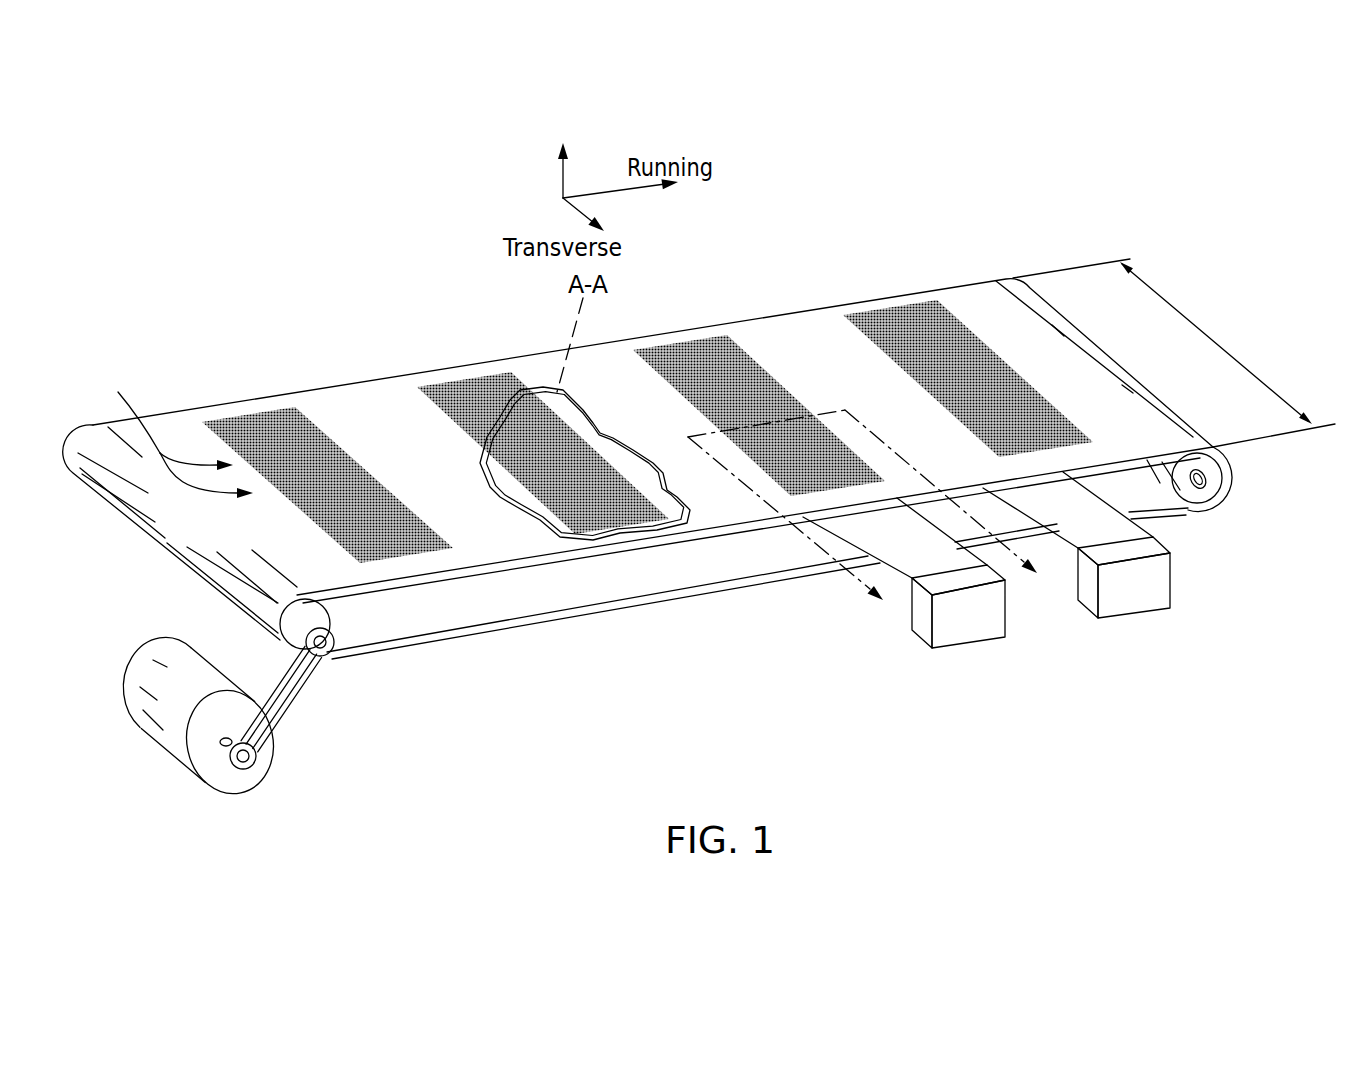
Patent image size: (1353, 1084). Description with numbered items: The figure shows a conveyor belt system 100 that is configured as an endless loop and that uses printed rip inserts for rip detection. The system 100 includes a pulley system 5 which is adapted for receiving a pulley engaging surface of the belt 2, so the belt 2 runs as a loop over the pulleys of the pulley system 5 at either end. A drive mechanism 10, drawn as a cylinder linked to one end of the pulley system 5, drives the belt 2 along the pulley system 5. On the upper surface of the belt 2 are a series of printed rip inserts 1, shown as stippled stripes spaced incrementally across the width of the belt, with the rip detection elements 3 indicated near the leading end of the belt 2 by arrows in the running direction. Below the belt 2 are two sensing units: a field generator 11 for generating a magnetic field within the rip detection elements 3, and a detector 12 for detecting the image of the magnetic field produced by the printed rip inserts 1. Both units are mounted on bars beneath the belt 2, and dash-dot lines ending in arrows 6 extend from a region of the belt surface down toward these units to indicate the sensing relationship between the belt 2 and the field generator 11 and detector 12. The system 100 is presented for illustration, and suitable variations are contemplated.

The conveyor belt system 100 is at (1082, 188).
The printed rip inserts 1 is at (238, 421).
The belt 2 is at (816, 290).
The rip detection elements 3 is at (178, 428).
The pulley system 5 is at (281, 640).
The sensing direction 6 is at (874, 522).
The drive mechanism 10 is at (200, 774).
The field generator 11 is at (965, 632).
The detector 12 is at (1131, 600).